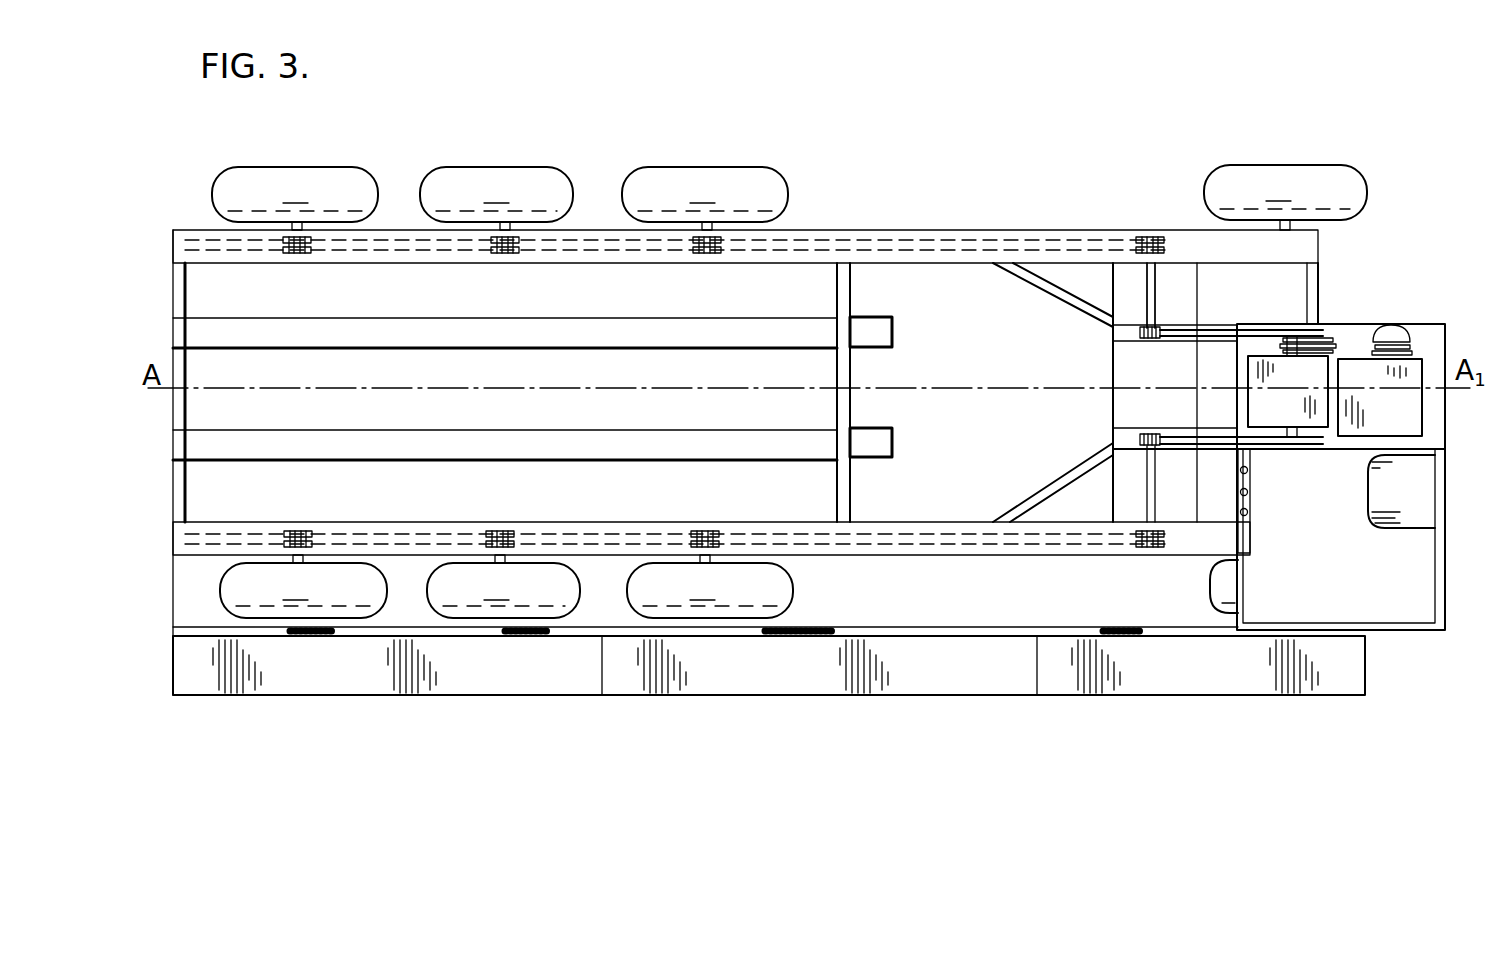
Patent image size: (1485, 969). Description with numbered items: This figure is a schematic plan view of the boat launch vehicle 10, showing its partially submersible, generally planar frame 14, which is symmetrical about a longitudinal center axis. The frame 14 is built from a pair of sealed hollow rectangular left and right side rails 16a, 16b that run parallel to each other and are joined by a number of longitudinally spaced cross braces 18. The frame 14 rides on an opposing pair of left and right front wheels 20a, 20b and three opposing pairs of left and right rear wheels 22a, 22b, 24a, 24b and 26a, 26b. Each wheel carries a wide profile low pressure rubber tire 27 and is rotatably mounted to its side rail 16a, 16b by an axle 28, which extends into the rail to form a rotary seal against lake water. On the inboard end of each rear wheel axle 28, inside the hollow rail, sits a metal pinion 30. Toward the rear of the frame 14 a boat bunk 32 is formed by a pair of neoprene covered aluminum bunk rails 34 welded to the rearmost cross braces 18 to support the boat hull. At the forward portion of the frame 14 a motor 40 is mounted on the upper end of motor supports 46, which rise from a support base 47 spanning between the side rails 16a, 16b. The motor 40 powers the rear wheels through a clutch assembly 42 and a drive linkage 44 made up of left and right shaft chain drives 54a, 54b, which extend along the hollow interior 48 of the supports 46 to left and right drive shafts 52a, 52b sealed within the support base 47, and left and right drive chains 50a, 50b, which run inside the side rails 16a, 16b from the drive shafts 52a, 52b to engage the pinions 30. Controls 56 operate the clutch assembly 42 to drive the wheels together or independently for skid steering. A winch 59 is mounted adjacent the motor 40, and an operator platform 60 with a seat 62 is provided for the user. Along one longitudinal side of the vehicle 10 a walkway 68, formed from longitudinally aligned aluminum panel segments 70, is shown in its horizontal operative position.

The launch vehicle 10 is at (1055, 212).
The frame 14 is at (922, 264).
The left side rail 16a is at (900, 228).
The right side rail 16b is at (940, 556).
The cross braces 18 is at (180, 295).
The left front wheel 20a is at (1320, 180).
The right front wheel 20b is at (1212, 582).
The left rear wheel 22a is at (655, 182).
The right rear wheel 22b is at (792, 590).
The left rear wheel 24a is at (445, 182).
The right rear wheel 24b is at (465, 604).
The left rear wheel 26a is at (333, 183).
The right rear wheel 26b is at (342, 604).
The rubber tire 27 is at (791, 385).
The axle 28 is at (290, 230).
The pinion 30 is at (300, 254).
The boat bunk 32 is at (742, 348).
The bunk rails 34 is at (562, 336).
The motor 40 is at (1395, 414).
The clutch assembly 42 is at (1298, 416).
The drive linkage 44 is at (1158, 300).
The motor supports 46 is at (1362, 324).
The support base 47 is at (1115, 372).
The hollow interior 48 is at (1115, 338).
The left drive chain 50a is at (963, 224).
The right drive chain 50b is at (1002, 542).
The left drive shaft 52a is at (1145, 290).
The right drive shaft 52b is at (1150, 492).
The left shaft chain drive 54a is at (1190, 345).
The right shaft chain drive 54b is at (1190, 438).
The controls 56 is at (1252, 492).
The winch 59 is at (1290, 338).
The operator platform 60 is at (1350, 586).
The seat 62 is at (1418, 501).
The walkway 68 is at (882, 698).
The panel segments 70 is at (567, 678).